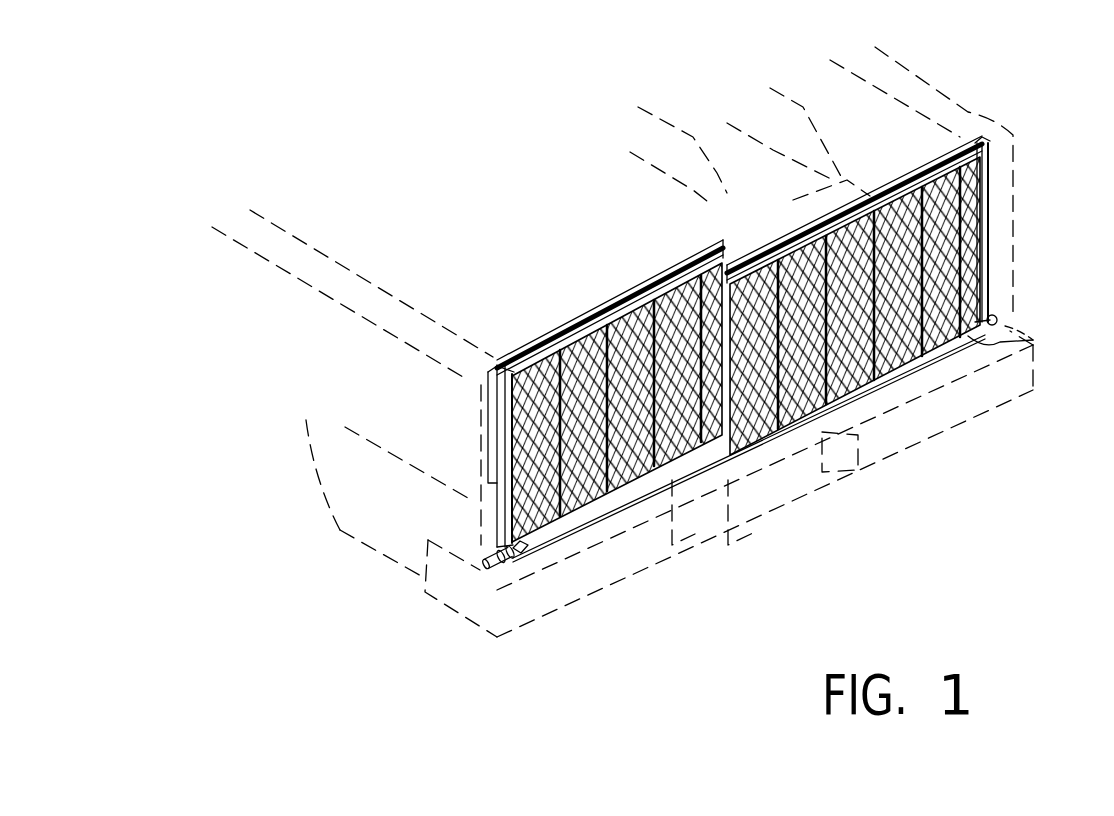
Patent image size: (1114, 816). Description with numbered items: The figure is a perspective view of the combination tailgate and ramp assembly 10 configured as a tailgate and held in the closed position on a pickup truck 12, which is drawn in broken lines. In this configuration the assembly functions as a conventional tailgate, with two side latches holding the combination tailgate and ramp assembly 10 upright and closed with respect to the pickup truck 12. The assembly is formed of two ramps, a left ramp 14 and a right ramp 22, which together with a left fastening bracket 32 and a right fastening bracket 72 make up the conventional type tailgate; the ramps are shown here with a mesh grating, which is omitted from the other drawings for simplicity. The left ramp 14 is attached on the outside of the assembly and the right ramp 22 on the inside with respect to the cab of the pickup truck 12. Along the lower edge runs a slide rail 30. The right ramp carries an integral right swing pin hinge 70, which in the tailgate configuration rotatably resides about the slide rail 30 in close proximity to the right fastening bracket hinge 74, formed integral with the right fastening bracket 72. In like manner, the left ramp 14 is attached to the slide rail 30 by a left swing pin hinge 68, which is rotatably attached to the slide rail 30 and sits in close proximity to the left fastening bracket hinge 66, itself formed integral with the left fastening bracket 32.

The combination tailgate and ramp assembly 10 is at (753, 421).
The pickup truck 12 is at (945, 94).
The left ramp 14 is at (640, 287).
The right ramp 22 is at (553, 333).
The slide rail 30 is at (484, 567).
The left fastening bracket 32 is at (493, 522).
The left fastening bracket hinge 66 is at (511, 555).
The left swing pin hinge 68 is at (523, 552).
The right swing pin hinge 70 is at (1033, 340).
The right fastening bracket 72 is at (990, 227).
The right fastening bracket hinge 74 is at (1003, 320).